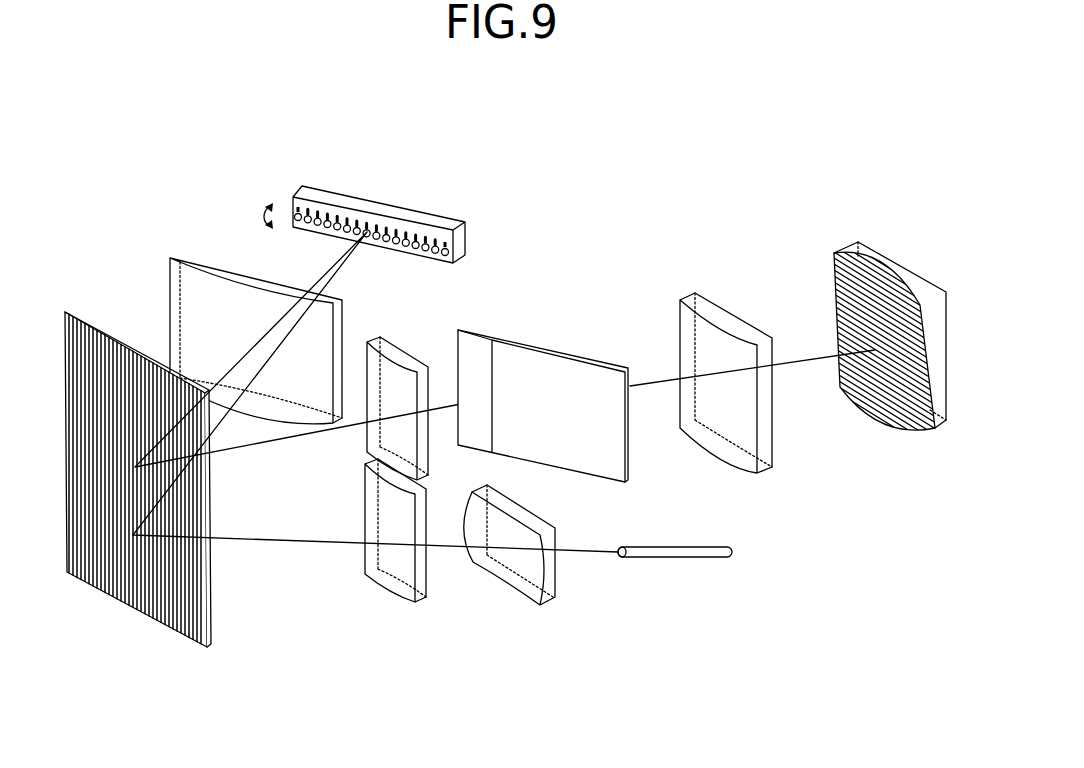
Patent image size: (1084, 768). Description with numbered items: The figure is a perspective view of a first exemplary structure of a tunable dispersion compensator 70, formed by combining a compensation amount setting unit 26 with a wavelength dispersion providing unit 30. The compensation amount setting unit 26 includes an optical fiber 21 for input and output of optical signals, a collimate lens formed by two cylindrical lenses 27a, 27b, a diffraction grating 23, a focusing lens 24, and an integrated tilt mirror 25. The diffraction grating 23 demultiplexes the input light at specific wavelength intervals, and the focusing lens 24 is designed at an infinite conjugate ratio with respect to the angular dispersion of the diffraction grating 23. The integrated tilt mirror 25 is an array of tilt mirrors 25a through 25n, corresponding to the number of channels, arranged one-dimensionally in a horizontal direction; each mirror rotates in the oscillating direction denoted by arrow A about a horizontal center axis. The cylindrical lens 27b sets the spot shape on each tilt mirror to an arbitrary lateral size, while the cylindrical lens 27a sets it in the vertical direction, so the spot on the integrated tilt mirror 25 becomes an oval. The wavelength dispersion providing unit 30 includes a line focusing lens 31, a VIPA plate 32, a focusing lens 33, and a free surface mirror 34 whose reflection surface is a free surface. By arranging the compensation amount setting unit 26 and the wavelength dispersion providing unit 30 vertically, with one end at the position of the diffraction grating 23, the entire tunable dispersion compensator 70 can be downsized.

The tunable dispersion compensator 70 is at (672, 147).
The compensation amount setting unit 26 is at (308, 155).
The integrated tilt mirror 25 is at (378, 200).
The tilt mirror 25a is at (296, 200).
The tilt mirror 25n is at (443, 256).
The focusing lens 24 is at (176, 257).
The diffraction grating 23 is at (84, 318).
The line focusing lens 31 is at (413, 353).
The VIPA plate 32 is at (541, 347).
The wavelength dispersion providing unit 30 is at (600, 310).
The focusing lens 33 is at (757, 320).
The free surface mirror 34 is at (890, 260).
The cylindrical lens 27b is at (373, 587).
The cylindrical lens 27a is at (510, 588).
The optical fiber 21 is at (672, 557).